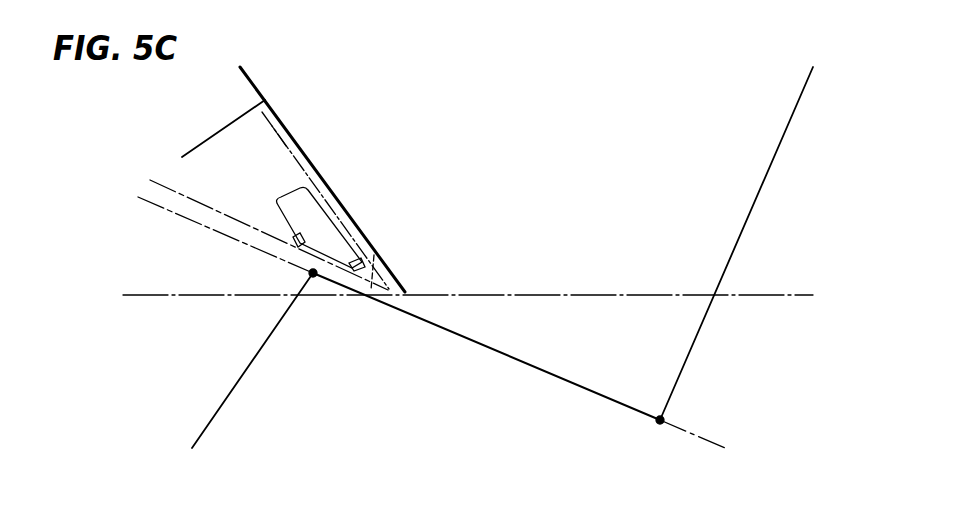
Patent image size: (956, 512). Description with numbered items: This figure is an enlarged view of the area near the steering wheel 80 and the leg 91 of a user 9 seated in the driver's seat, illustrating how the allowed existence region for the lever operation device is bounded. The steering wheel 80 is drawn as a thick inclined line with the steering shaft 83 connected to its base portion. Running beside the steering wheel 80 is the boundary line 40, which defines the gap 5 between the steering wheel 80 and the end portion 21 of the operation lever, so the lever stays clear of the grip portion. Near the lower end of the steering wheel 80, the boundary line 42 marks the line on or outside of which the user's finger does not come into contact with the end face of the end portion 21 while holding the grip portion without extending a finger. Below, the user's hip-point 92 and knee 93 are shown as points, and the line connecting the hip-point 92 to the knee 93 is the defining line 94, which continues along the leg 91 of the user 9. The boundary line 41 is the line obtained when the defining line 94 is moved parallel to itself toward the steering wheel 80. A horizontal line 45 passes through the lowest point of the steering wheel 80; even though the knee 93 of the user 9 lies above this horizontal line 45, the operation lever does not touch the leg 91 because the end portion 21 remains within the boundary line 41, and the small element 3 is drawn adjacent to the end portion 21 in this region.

The steering wheel 80 is at (253, 80).
The steering shaft 83 is at (225, 127).
The gap 5 is at (330, 200).
The boundary line 40 is at (280, 137).
The boundary line 41 is at (258, 226).
The end portion 21 is at (286, 203).
The anchor 3 is at (288, 232).
The boundary line 42 is at (368, 268).
The horizontal line 45 is at (483, 300).
The knee 93 is at (313, 279).
The leg 91 is at (460, 338).
The hip-point 92 is at (659, 425).
The defining line 94 is at (707, 444).
The user 9 is at (797, 107).